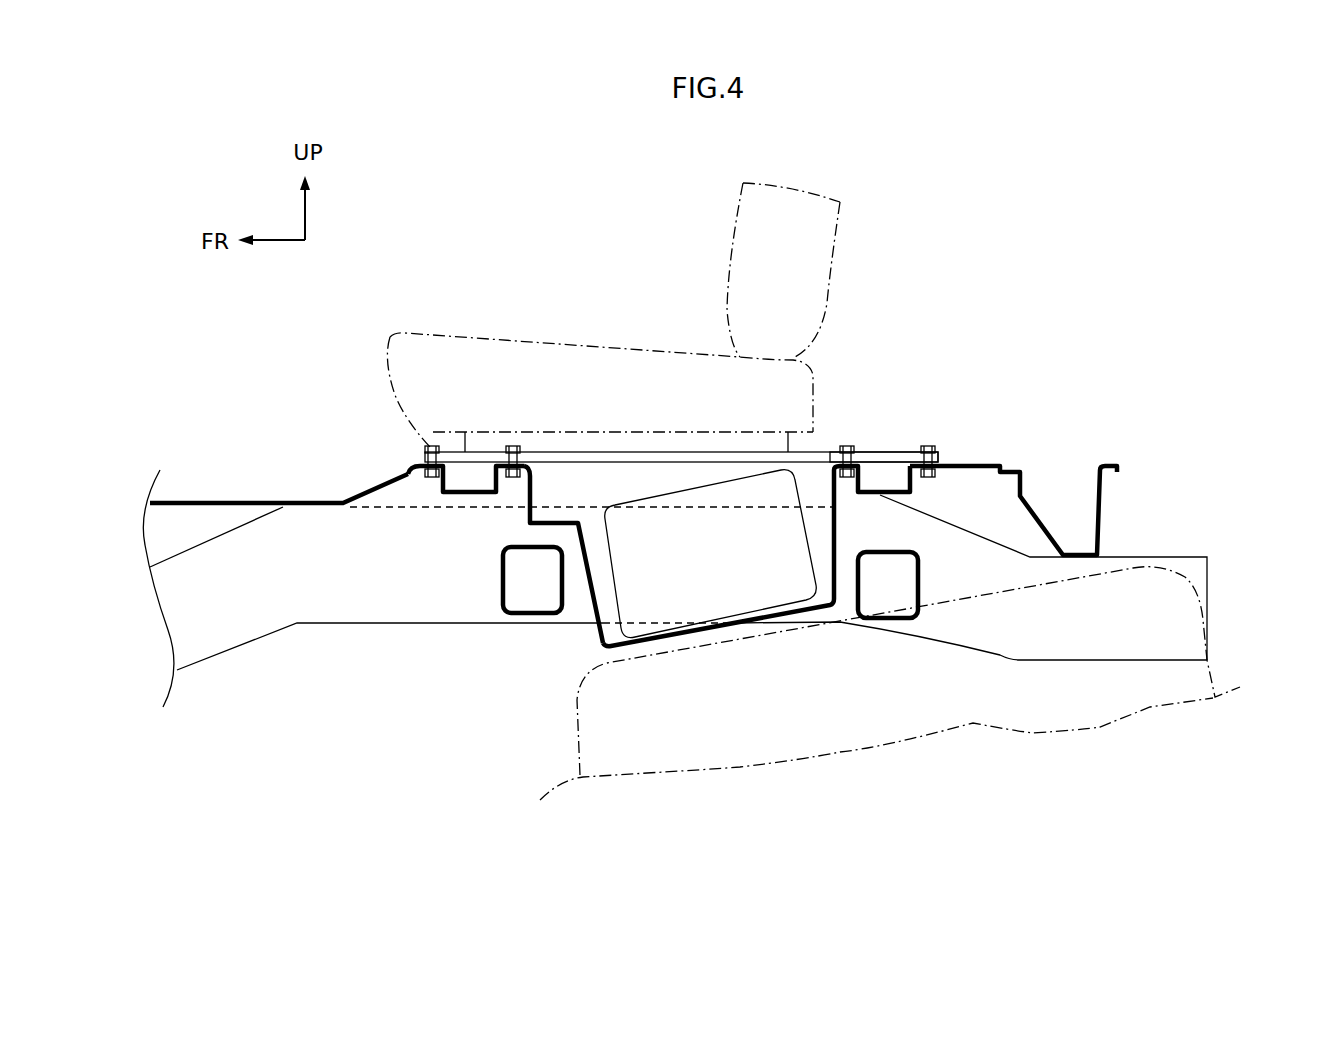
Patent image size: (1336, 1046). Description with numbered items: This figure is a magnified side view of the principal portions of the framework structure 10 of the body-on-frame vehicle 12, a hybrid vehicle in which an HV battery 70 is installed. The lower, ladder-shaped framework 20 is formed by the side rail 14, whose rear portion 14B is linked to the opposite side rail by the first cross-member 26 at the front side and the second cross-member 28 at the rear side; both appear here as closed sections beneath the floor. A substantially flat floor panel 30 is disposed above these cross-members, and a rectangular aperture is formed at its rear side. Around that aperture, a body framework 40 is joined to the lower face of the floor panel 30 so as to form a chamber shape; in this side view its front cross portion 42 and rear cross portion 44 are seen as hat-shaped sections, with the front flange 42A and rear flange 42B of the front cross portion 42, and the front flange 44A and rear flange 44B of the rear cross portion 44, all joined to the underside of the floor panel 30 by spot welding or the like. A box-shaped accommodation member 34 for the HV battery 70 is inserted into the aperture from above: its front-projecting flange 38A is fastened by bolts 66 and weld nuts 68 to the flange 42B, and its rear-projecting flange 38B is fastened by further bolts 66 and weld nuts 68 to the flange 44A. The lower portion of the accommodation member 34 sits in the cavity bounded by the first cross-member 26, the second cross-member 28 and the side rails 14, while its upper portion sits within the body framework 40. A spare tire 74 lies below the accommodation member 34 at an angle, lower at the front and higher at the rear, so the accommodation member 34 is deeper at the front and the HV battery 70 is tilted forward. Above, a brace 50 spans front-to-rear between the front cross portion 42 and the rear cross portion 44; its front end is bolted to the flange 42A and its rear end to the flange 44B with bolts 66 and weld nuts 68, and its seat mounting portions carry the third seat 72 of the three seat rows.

The framework structure 10 is at (783, 665).
The body-on-frame vehicle 12 is at (670, 317).
The side rail 14 is at (298, 634).
The rear portion 14B is at (577, 610).
The framework 20 is at (268, 652).
The first cross-member 26 is at (517, 614).
The second cross-member 28 is at (912, 622).
The floor panel 30 is at (220, 503).
The accommodation member 34 is at (597, 650).
The flange 38A is at (487, 450).
The flange 38B is at (868, 463).
The body framework 40 is at (437, 496).
The front cross portion 42 is at (435, 575).
The flange 42A is at (423, 468).
The flange 42B is at (513, 480).
The rear cross portion 44 is at (975, 627).
The flange 44A is at (838, 470).
The flange 44B is at (932, 470).
The brace 50 is at (624, 446).
The bolt 66 is at (428, 450).
The weld nut 68 is at (430, 480).
The HV battery 70 is at (713, 603).
The third seat 72 is at (620, 343).
The spare tire 74 is at (1213, 687).